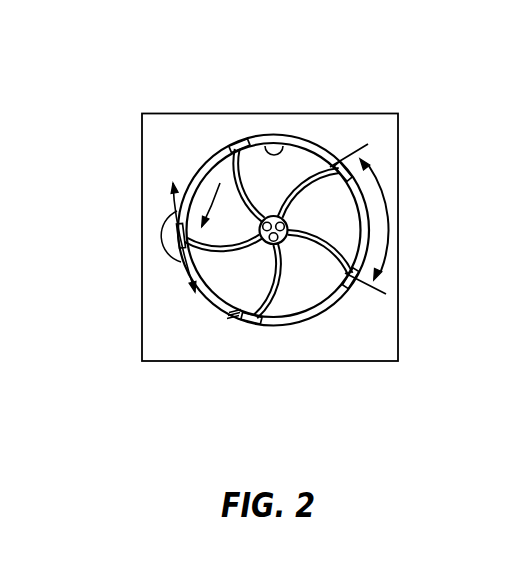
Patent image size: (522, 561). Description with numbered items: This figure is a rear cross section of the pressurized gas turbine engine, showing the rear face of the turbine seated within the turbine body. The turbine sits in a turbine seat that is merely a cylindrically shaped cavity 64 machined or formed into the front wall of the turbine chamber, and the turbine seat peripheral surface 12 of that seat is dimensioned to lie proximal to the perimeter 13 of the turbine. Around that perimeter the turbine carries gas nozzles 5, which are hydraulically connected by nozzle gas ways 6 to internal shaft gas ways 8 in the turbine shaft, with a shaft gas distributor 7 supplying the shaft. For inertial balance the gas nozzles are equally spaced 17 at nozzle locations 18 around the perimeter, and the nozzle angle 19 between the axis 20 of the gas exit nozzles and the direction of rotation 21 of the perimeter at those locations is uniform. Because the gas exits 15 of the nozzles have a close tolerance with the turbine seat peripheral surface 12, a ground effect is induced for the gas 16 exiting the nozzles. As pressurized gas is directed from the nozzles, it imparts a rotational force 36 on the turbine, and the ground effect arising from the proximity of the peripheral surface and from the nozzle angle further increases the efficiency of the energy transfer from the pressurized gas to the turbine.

The turbine seat peripheral surface 12 is at (308, 143).
The perimeter of the turbine 13 is at (285, 148).
The equal spacing of the gas nozzles 17 is at (380, 188).
The gas nozzles 5 is at (238, 147).
The nozzle locations 18 is at (241, 146).
The rotational force 36 is at (258, 218).
The internal shaft gas ways 8 is at (258, 226).
The axis of the gas exit nozzles 20 is at (175, 198).
The nozzle angle 19 is at (158, 240).
The direction of rotation 21 is at (186, 268).
The cylindrically shaped cavity 64 is at (233, 288).
The nozzle gas ways 6 is at (237, 282).
The gas exiting the nozzles 16 is at (233, 312).
The shaft gas distributor 7 is at (294, 234).
The gas exits 15 is at (343, 292).